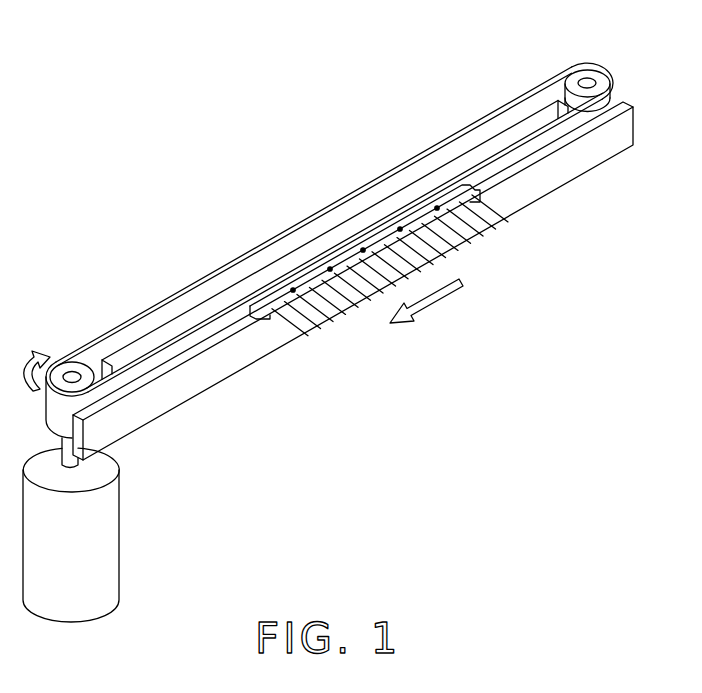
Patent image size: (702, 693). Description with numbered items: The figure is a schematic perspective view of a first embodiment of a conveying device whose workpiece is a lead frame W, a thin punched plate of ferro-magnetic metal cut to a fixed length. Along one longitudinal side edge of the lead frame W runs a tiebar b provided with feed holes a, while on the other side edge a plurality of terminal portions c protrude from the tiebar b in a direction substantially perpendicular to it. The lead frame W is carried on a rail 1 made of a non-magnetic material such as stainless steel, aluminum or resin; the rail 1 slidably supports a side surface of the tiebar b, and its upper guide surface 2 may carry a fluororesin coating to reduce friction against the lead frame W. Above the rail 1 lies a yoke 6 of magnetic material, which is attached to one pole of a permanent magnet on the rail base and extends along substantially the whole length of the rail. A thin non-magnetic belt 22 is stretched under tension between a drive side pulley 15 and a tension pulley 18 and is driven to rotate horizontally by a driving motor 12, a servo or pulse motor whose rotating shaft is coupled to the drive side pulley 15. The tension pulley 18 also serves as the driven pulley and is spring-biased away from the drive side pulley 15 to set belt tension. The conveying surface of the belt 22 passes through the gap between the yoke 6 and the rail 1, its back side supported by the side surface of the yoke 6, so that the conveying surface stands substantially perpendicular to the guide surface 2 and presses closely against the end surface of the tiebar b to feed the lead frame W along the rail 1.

The rail 1 is at (222, 372).
The guide surface 2 is at (145, 380).
The yoke 6 is at (282, 267).
The driving motor 12 is at (103, 538).
The drive side pulley 15 is at (75, 368).
The tension pulley 18 is at (598, 78).
The belt 22 is at (213, 288).
The feed holes a is at (330, 270).
The tiebar b is at (270, 305).
The terminal portions c is at (483, 236).
The lead frame W is at (313, 345).